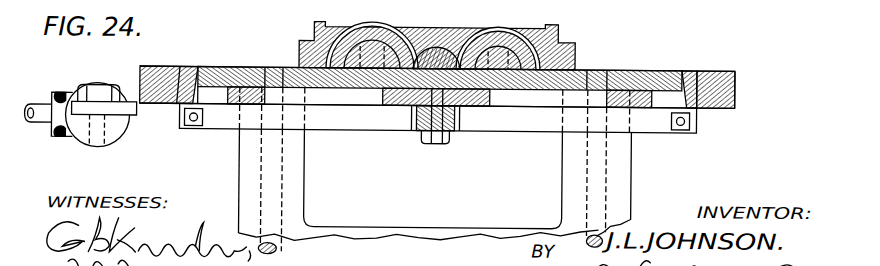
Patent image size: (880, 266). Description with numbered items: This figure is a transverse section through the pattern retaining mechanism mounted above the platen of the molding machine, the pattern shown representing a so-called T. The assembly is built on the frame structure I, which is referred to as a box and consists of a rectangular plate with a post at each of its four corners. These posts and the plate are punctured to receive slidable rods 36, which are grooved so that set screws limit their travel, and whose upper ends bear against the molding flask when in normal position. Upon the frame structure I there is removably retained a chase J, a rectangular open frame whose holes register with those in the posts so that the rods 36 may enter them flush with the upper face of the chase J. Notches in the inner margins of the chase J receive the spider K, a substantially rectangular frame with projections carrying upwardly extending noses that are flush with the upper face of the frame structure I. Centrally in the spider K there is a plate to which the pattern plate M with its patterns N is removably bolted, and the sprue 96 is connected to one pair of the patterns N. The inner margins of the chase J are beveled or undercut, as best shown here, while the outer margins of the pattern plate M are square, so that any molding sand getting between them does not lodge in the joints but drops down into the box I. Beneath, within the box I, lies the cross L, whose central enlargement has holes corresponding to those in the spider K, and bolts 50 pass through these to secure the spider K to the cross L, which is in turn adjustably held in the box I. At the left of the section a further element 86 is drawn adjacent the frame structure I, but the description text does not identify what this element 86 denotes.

The shaft bearing 86 is at (82, 86).
The patterns N is at (466, 30).
The sprue 96 is at (437, 44).
The pattern plate M is at (614, 64).
The spider K is at (687, 63).
The chase J is at (727, 62).
The cross L is at (508, 131).
The bolts 50 is at (426, 146).
The frame structure I is at (433, 178).
The slidable rods 36 is at (285, 251).